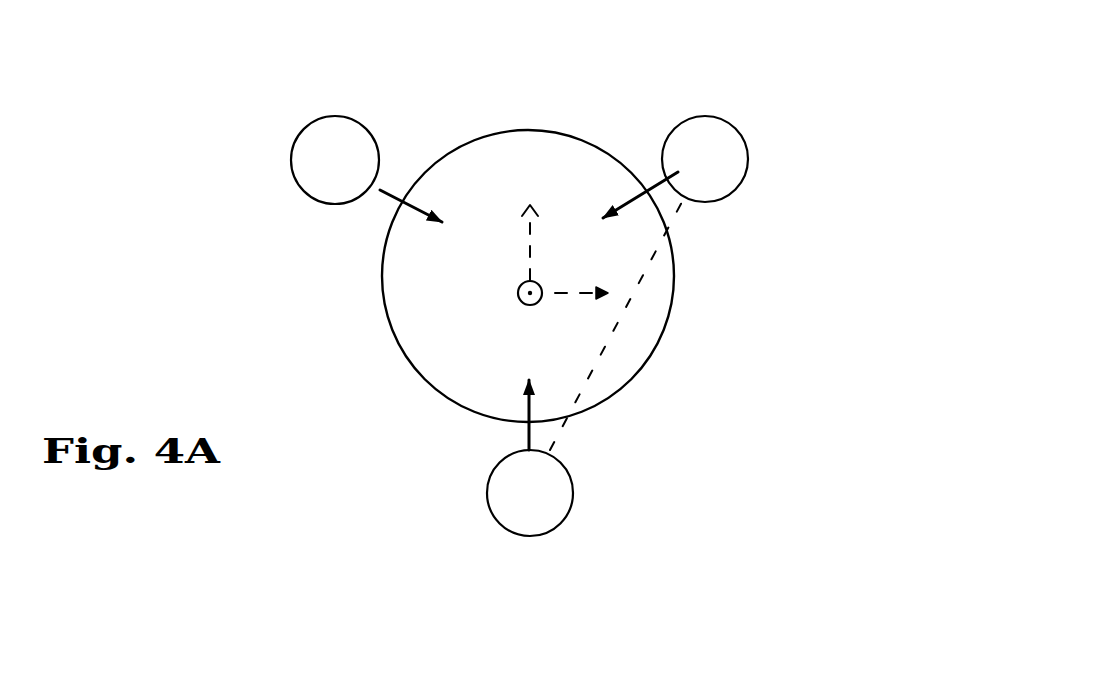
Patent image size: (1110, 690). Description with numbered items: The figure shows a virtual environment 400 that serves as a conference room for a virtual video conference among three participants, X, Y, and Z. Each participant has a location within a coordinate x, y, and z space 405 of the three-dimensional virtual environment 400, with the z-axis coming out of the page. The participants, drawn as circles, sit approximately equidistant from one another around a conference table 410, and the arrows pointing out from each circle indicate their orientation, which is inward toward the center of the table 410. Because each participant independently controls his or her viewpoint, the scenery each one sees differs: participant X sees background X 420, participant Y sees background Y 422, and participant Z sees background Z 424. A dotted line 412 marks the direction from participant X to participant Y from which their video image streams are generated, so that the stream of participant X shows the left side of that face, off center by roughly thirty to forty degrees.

The virtual environment 400 is at (786, 26).
The coordinate x, y, and z space 405 is at (506, 284).
The conference table 410 is at (675, 318).
The dotted line 412 is at (612, 338).
The background X 420 is at (255, 340).
The background Y 422 is at (587, 41).
The background Z 424 is at (705, 484).